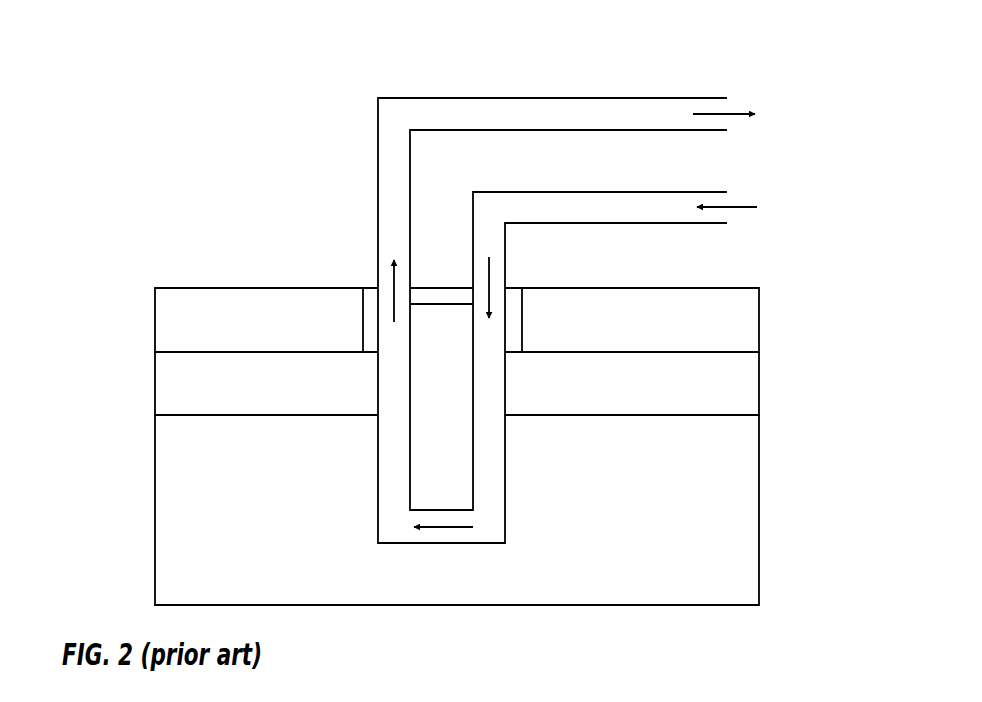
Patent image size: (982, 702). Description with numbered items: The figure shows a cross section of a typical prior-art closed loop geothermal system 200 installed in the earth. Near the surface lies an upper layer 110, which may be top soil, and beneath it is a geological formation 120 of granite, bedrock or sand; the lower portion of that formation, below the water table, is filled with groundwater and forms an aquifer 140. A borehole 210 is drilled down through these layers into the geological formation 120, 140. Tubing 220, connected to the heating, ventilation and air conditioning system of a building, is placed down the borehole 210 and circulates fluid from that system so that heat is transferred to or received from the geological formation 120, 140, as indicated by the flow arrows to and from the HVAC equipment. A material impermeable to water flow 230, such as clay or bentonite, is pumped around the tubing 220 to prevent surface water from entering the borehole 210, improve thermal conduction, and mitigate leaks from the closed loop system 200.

The closed loop geothermal system 200 is at (331, 112).
The upper layer 110 is at (727, 320).
The geological formation 120 is at (727, 384).
The aquifer 140 is at (757, 416).
The borehole 210 is at (440, 462).
The tubing 220 is at (505, 483).
The material impermeable to water flow 230 is at (372, 288).